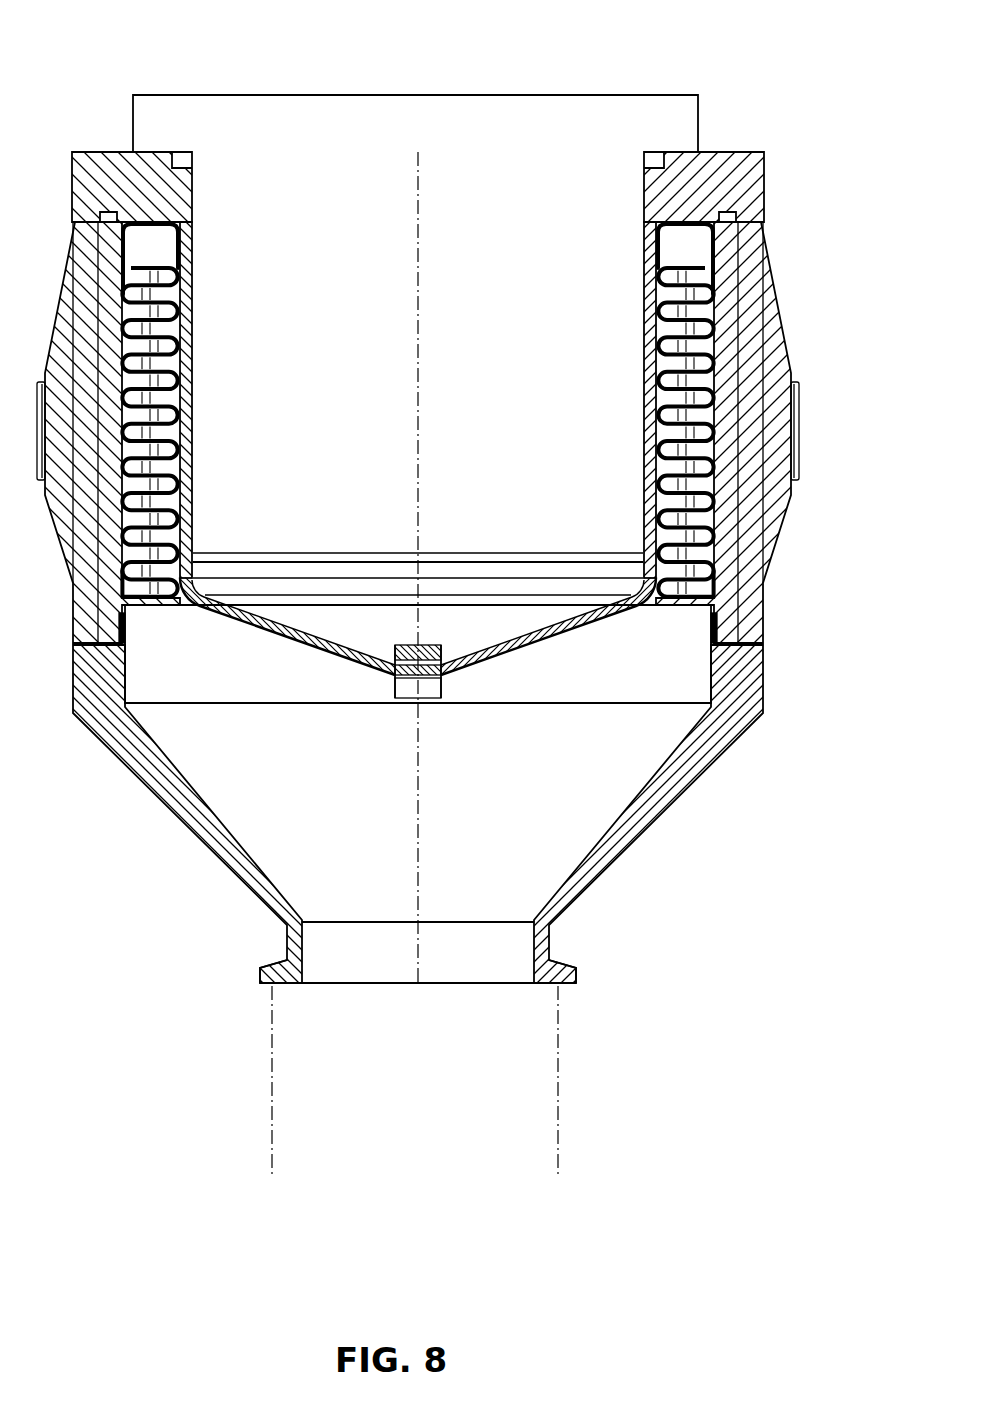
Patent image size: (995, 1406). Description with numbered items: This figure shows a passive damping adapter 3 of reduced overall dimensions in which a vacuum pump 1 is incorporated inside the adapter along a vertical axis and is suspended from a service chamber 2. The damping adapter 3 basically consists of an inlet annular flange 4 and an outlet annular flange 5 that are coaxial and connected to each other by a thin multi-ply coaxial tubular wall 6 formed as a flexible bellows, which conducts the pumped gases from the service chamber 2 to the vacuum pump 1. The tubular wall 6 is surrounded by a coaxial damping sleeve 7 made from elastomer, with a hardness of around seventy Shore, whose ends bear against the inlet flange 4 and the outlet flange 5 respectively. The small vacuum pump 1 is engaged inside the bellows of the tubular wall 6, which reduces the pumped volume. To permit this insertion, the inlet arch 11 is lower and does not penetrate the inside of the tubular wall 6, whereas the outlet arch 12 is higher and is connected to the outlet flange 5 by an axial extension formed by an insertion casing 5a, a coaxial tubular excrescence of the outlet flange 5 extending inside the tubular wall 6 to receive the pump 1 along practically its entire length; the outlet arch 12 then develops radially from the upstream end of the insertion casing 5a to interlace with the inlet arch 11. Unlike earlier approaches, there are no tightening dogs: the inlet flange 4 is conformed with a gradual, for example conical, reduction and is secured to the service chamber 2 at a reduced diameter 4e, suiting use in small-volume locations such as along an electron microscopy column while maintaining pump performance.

The vacuum pump 1 is at (312, 200).
The service chamber 2 is at (272, 1116).
The damping adapter 3 is at (787, 343).
The inlet annular flange 4 is at (212, 835).
The reduced diameter 4e is at (527, 943).
The outlet annular flange 5 is at (720, 183).
The insertion casing 5a is at (192, 325).
The tubular wall 6 is at (714, 492).
The damping sleeve 7 is at (752, 325).
The inlet arch 11 is at (418, 688).
The outlet arch 12 is at (300, 637).